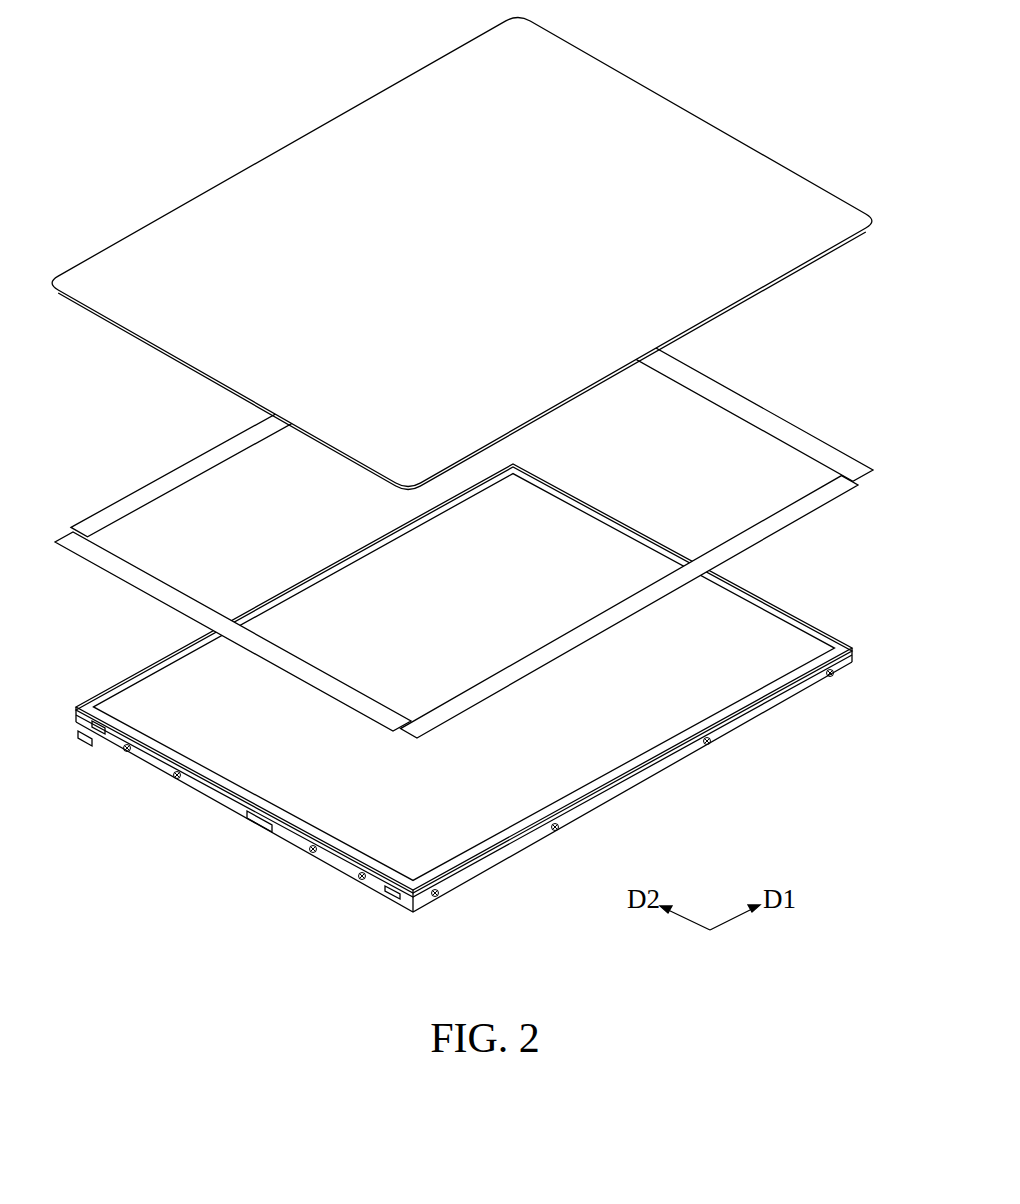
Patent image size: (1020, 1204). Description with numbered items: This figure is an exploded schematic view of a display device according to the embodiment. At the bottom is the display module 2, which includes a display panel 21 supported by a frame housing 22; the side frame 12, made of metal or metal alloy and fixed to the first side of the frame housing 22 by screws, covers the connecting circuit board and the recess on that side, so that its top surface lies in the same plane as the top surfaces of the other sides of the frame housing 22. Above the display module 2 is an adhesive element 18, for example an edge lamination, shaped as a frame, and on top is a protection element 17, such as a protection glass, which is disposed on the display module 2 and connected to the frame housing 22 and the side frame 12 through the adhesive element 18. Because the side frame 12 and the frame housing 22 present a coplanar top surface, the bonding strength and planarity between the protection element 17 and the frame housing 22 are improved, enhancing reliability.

The display module 2 is at (474, 688).
The side frame 12 is at (744, 727).
The protection element 17 is at (692, 110).
The adhesive element 18 is at (742, 400).
The display panel 21 is at (160, 700).
The frame housing 22 is at (817, 632).